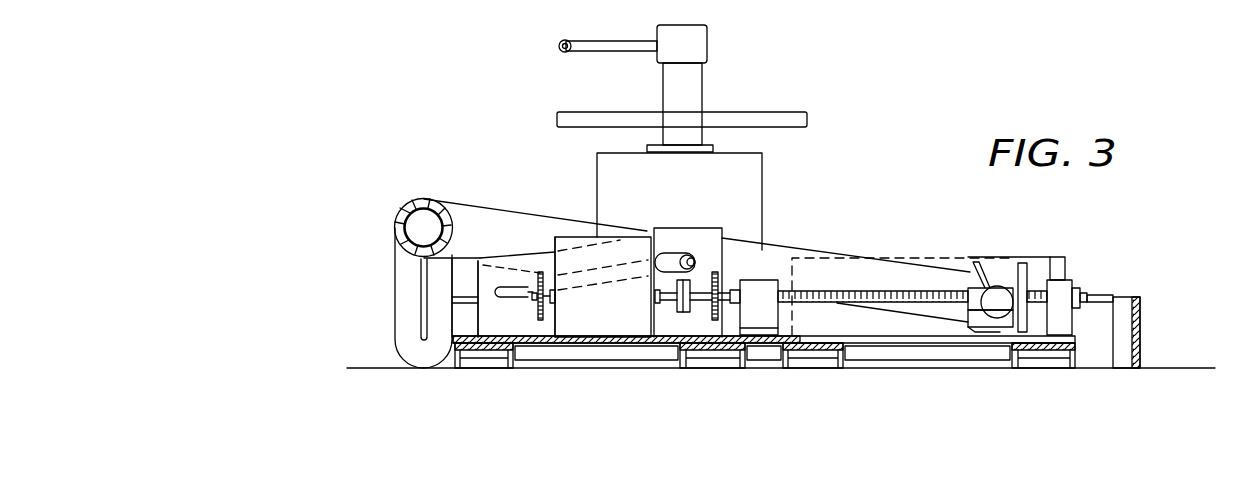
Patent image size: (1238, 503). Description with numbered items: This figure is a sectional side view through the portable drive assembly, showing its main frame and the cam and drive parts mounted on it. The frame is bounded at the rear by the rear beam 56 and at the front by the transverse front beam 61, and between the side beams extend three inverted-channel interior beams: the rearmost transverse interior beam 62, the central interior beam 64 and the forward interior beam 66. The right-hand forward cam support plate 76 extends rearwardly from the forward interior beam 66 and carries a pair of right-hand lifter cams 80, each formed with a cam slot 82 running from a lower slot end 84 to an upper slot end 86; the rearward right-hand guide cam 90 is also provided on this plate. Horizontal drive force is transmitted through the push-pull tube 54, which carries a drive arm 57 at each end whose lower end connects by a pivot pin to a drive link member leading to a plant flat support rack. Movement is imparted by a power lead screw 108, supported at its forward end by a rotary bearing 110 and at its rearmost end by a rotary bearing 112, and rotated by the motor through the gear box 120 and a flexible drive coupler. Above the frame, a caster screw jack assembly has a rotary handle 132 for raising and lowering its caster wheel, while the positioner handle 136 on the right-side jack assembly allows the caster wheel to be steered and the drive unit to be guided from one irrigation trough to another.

The push-pull tube 54 is at (418, 200).
The rear beam 56 is at (490, 345).
The drive arm 57 is at (408, 307).
The transverse front beam 61 is at (1140, 332).
The rearmost transverse interior beam 62 is at (707, 352).
The central interior beam 64 is at (808, 352).
The forward interior beam 66 is at (1043, 348).
The right-hand forward cam support plate 76 is at (932, 342).
The right-hand lifter cam 80 is at (745, 246).
The cam slot 82 is at (613, 268).
The lower slot end 84 is at (513, 296).
The upper slot end 86 is at (695, 250).
The rearward right-hand guide cam 90 is at (1050, 262).
The power lead screw 108 is at (820, 293).
The rotary bearing 110 is at (1063, 290).
The rotary bearing 112 is at (748, 286).
The gear box 120 is at (583, 326).
The rotary handle 132 is at (598, 16).
The positioner handle 136 is at (748, 85).